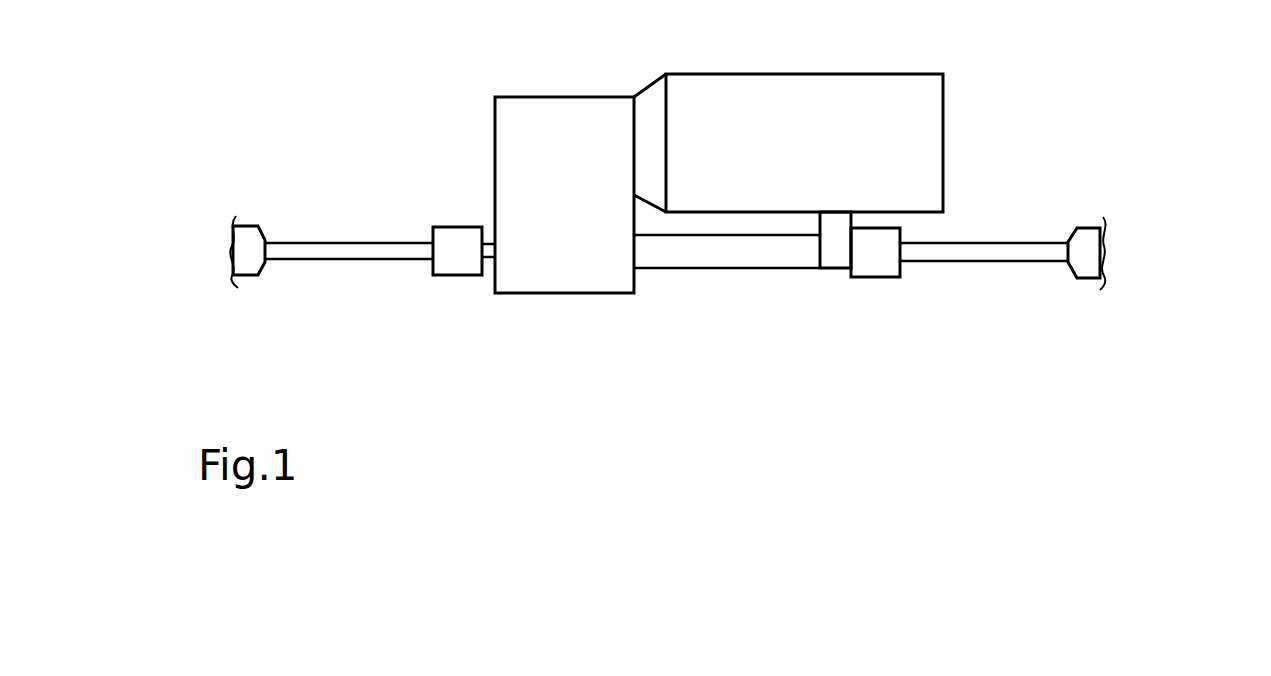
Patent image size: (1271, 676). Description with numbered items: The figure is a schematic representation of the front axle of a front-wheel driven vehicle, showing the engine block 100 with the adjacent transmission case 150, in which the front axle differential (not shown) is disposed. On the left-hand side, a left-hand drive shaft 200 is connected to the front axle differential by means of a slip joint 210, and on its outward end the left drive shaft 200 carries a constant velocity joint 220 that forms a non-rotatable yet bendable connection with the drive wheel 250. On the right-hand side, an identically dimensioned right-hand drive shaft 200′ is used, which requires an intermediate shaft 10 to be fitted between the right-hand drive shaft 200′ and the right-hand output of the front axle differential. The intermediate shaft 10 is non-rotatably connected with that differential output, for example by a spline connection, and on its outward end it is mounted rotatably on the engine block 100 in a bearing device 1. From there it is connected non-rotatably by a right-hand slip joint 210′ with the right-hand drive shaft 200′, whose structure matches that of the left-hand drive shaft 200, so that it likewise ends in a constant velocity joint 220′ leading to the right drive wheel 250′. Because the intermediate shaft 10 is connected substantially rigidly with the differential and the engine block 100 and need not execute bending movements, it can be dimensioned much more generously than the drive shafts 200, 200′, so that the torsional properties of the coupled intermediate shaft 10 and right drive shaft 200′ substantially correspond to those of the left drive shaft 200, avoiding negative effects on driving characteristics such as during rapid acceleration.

The bearing device 1 is at (833, 253).
The intermediate shaft 10 is at (727, 252).
The engine block 100 is at (787, 85).
The transmission case 150 is at (538, 115).
The left-hand drive shaft 200 is at (373, 254).
The right-hand drive shaft 200′ is at (987, 252).
The slip joint 210 is at (471, 266).
The right-hand slip joint 210′ is at (864, 262).
The constant velocity joint 220 is at (253, 246).
The constant velocity joint 220′ is at (1088, 267).
The drive wheel 250 is at (232, 213).
The drive wheel 250′ is at (1105, 217).